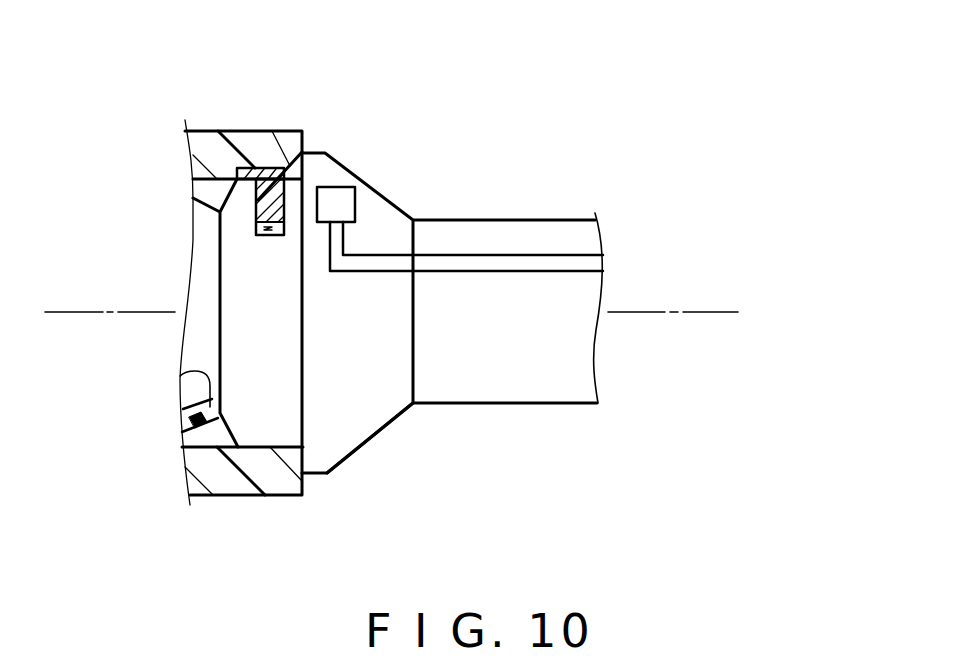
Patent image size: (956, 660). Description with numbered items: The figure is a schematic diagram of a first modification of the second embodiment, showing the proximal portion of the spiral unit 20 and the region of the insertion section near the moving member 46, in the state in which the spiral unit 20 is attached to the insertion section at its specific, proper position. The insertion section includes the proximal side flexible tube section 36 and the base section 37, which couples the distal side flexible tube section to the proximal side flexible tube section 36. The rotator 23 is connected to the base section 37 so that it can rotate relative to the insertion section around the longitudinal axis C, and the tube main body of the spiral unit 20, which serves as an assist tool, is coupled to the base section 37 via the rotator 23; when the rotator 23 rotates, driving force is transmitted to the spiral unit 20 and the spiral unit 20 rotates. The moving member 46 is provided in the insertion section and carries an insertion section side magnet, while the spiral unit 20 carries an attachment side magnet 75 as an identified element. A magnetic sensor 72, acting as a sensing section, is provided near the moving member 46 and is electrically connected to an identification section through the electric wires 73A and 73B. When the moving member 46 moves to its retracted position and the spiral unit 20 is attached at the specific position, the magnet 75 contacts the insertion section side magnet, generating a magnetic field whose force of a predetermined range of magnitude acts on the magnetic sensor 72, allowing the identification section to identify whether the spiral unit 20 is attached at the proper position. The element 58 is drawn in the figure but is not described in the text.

The spiral unit 20 is at (228, 501).
The rotator 23 is at (192, 390).
The seal member 58 is at (190, 417).
The magnet (attachment side magnet) 75 is at (257, 169).
The moving member 46 is at (278, 184).
The magnetic sensor 72 is at (337, 197).
The proximal side flexible tube section 36 is at (452, 390).
The base section 37 is at (332, 426).
The electric wire 73A is at (500, 255).
The electric wire 73B is at (557, 271).
The longitudinal axis C is at (696, 313).